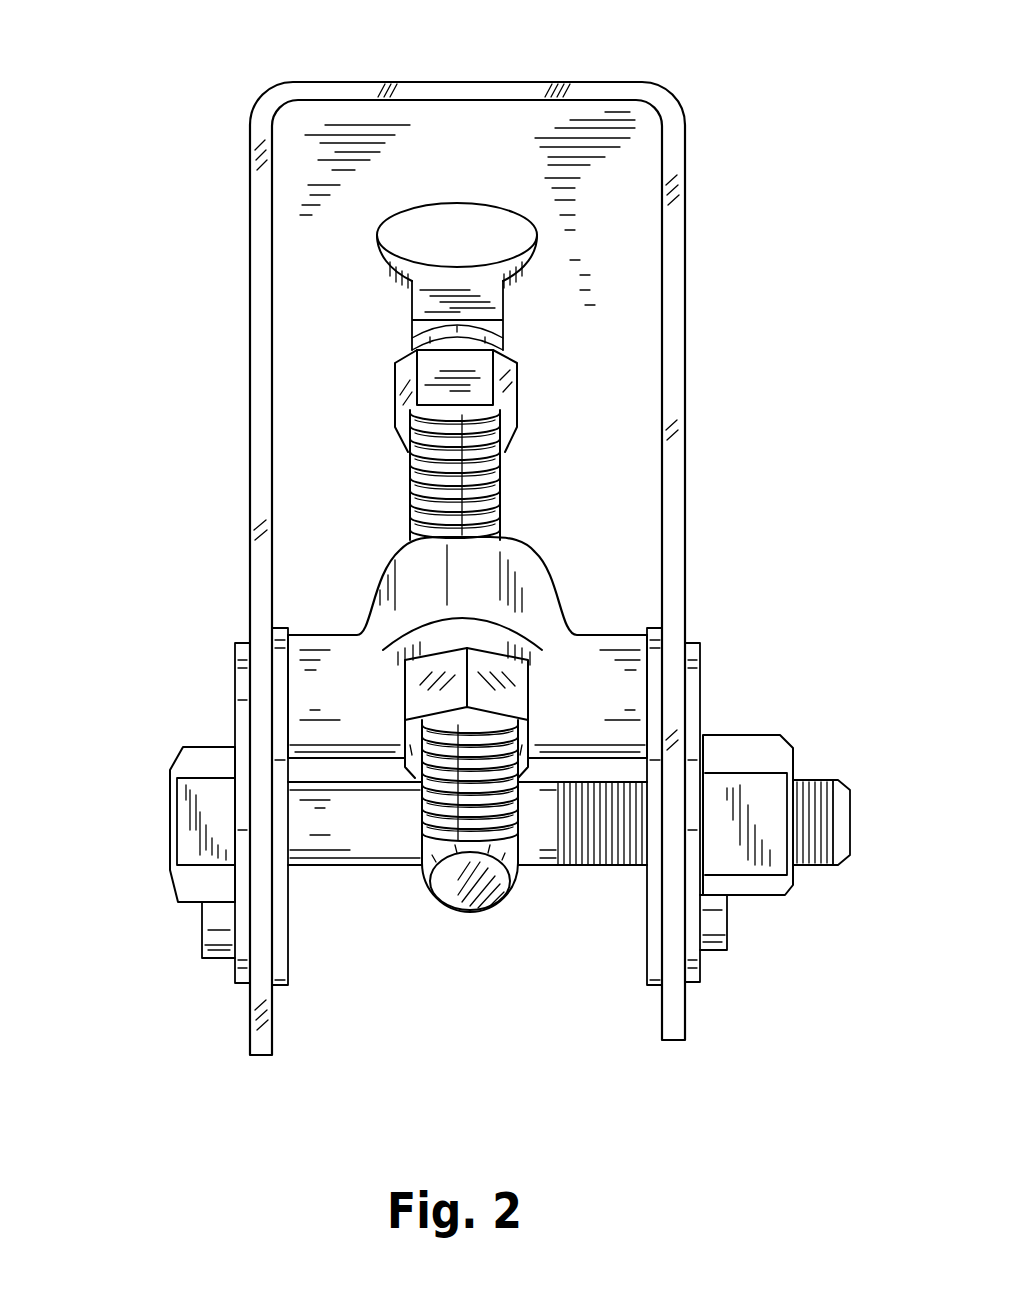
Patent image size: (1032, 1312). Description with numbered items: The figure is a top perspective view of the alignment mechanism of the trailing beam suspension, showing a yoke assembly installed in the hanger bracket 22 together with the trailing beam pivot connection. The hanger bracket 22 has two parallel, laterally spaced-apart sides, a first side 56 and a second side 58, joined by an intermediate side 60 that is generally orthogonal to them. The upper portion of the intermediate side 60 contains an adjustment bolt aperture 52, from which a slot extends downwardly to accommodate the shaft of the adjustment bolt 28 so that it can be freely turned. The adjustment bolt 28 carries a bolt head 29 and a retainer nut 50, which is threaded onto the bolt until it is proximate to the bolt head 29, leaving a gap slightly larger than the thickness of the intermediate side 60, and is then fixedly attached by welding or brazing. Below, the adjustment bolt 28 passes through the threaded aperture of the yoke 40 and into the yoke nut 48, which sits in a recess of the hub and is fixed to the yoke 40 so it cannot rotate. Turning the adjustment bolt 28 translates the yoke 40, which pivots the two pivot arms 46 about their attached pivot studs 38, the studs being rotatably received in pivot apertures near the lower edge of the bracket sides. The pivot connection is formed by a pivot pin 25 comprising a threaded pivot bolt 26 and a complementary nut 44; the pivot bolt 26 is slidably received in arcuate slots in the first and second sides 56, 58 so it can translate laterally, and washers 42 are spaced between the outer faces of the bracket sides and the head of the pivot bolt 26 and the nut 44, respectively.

The hanger bracket 22 is at (441, 535).
The pivot pin 25 is at (348, 838).
The pivot bolt 26 is at (187, 817).
The adjustment bolt 28 is at (500, 480).
The bolt head 29 is at (412, 299).
The pivot stud 38 is at (210, 955).
The yoke 40 is at (518, 610).
The washer 42 is at (235, 727).
The nut 44 is at (767, 788).
The pivot arm 46 is at (280, 648).
The yoke nut 48 is at (512, 677).
The retainer nut 50 is at (500, 363).
The adjustment bolt aperture 52 is at (463, 260).
The first side 56 is at (262, 320).
The second side 58 is at (668, 247).
The intermediate side 60 is at (493, 97).